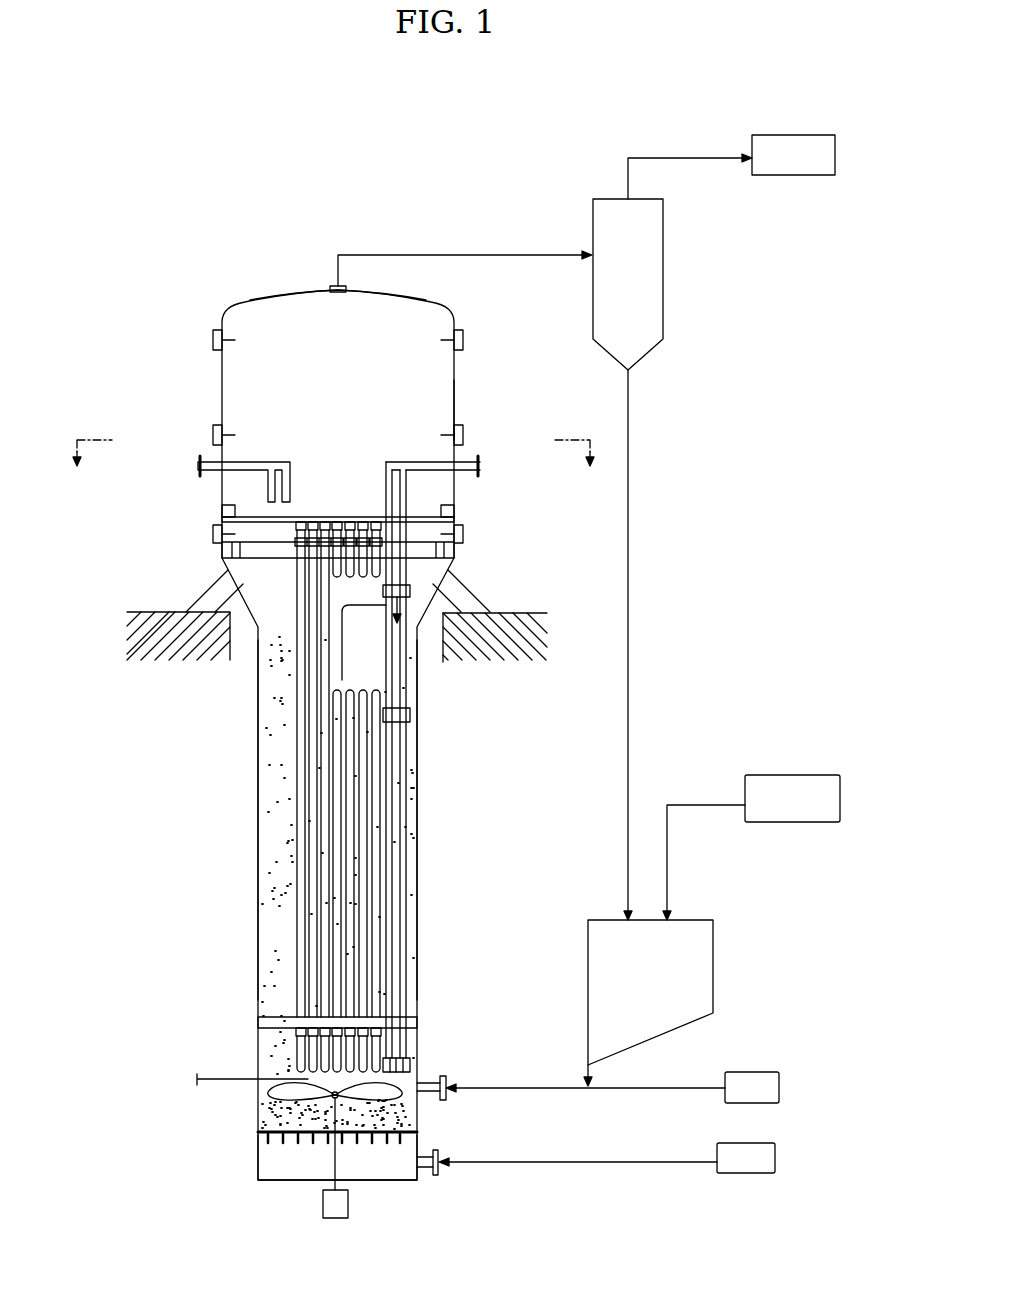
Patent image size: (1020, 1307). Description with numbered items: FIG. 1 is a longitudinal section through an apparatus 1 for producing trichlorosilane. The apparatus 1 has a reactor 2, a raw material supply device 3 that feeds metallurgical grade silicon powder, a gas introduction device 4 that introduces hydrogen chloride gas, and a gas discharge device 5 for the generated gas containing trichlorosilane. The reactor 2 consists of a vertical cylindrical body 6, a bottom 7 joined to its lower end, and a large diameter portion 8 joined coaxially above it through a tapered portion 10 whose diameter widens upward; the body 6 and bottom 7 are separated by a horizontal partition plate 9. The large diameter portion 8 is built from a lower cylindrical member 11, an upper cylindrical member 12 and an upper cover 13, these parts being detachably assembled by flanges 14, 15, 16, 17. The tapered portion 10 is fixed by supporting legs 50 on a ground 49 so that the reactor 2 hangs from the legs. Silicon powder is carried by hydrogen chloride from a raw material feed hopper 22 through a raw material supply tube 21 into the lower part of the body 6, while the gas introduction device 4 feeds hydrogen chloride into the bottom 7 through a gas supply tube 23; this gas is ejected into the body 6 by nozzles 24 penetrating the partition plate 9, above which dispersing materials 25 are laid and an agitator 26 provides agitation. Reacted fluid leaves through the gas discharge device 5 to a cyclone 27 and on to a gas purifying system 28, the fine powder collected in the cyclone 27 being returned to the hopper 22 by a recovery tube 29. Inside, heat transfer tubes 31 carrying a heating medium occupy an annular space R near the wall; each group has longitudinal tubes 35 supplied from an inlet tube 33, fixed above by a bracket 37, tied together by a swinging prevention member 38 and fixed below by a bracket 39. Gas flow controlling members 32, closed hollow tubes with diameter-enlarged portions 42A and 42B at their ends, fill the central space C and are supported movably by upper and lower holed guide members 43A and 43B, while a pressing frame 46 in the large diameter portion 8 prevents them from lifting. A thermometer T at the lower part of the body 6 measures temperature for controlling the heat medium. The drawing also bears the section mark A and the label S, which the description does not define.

The apparatus for producing trichlorosilane 1 is at (357, 198).
The reactor 2 is at (148, 696).
The raw material supply device 3 is at (687, 736).
The gas introduction device 4 is at (762, 1178).
The gas discharge device 5 is at (564, 210).
The body 6 is at (418, 985).
The bottom 7 is at (258, 1160).
The large diameter portion 8 is at (458, 420).
The partition plate 9 is at (258, 1120).
The tapered portion 10 is at (230, 625).
The lower cylindrical member 11 is at (220, 490).
The upper cylindrical member 12 is at (456, 395).
The upper cover 13 is at (430, 300).
The flange 14 is at (213, 537).
The flange 15 is at (213, 447).
The flange 16 is at (213, 348).
The flange 17 is at (218, 332).
The raw material supply tube 21 is at (547, 1085).
The raw material feed hopper 22 is at (590, 978).
The gas supply tube 23 is at (590, 1165).
The nozzles 24 is at (315, 1140).
The dispersing materials 25 is at (400, 1118).
The agitator 26 is at (265, 1095).
The cyclone 27 is at (663, 298).
The gas purifying system 28 is at (830, 177).
The recovery tube 29 is at (630, 497).
The heat transfer tubes 31 is at (282, 452).
The gas flow controlling members 32 is at (295, 868).
The inlet tube 33 is at (460, 468).
The longitudinal tubes 35 is at (378, 850).
The bracket 37 is at (447, 498).
The swinging prevention member 38 is at (410, 716).
The bracket 39 is at (410, 1062).
The diameter-enlarged portion 42A is at (293, 540).
The diameter-enlarged portion 42B is at (293, 1008).
The holed guide member 43A is at (265, 560).
The holed guide member 43B is at (262, 1020).
The pressing frame 46 is at (318, 515).
The ground 49 is at (523, 612).
The supporting legs 50 is at (455, 572).
The section line A- A is at (332, 470).
The central space C is at (362, 680).
The annular space R is at (275, 778).
The fluidized bed S is at (275, 828).
The thermometer T is at (236, 1079).